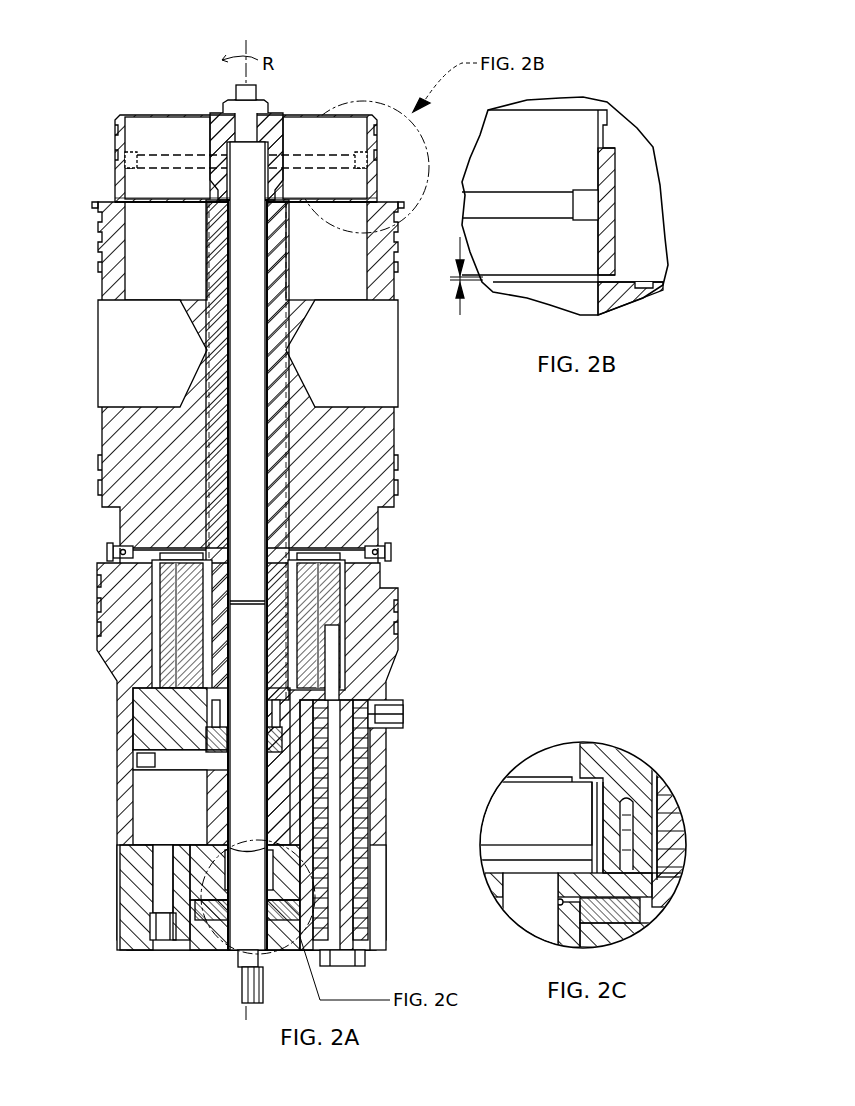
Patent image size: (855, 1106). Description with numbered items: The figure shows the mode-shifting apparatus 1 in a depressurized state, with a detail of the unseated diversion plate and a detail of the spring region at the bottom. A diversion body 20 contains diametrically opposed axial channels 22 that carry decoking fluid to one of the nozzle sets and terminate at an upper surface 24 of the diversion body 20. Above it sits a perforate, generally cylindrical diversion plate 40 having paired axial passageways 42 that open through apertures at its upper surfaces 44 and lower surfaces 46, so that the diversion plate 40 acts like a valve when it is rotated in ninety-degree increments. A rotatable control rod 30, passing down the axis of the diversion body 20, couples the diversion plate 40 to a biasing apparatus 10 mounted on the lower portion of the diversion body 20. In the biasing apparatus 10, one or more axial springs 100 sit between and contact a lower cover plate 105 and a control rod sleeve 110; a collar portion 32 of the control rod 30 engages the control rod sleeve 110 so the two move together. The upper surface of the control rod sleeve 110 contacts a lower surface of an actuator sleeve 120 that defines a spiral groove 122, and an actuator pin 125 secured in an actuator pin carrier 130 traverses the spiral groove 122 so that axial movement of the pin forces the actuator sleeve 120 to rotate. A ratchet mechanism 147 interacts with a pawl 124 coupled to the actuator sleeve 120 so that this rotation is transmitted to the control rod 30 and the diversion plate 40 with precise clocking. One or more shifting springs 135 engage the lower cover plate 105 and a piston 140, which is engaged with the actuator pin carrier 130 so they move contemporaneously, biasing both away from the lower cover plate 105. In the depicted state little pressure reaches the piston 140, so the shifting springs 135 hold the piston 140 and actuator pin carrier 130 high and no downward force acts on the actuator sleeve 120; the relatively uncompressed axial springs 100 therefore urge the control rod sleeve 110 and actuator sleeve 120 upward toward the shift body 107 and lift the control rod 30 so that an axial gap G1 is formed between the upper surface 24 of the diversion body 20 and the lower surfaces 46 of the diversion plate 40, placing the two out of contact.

In FIG. 2A, the mode-shifting apparatus 1 is at (145, 68).
In FIG. 2A, the biasing apparatus 10 is at (411, 946).
In FIG. 2A, the diversion body 20 is at (110, 265).
In FIG. 2A, the axial channels 22 is at (248, 304).
In FIG. 2A, the upper surface 24 is at (108, 198).
In FIG. 2B, the upper surface 24 is at (637, 272).
In FIG. 2A, the control rod 30 is at (395, 482).
In FIG. 2A, the collar portion 32 is at (262, 958).
In FIG. 2A, the diversion plate 40 is at (372, 112).
In FIG. 2B, the diversion plate 40 is at (598, 160).
In FIG. 2A, the axial passageways 42 is at (112, 135).
In FIG. 2A, the upper surfaces 44 is at (218, 113).
In FIG. 2A, the lower surfaces 46 is at (372, 200).
In FIG. 2B, the lower surfaces 46 is at (583, 275).
In FIG. 2A, the axial springs 100 is at (215, 948).
In FIG. 2C, the axial springs 100 is at (627, 928).
In FIG. 2A, the lower cover plate 105 is at (122, 893).
In FIG. 2A, the shift body 107 is at (433, 558).
In FIG. 2A, the control rod sleeve 110 is at (185, 955).
In FIG. 2C, the control rod sleeve 110 is at (667, 895).
In FIG. 2A, the actuator sleeve 120 is at (342, 966).
In FIG. 2C, the actuator sleeve 120 is at (627, 770).
In FIG. 2A, the spiral groove 122 is at (210, 787).
In FIG. 2A, the pawl 124 is at (210, 875).
In FIG. 2A, the actuator pin 125 is at (137, 760).
In FIG. 2A, the actuator pin carrier 130 is at (148, 712).
In FIG. 2A, the shifting springs 135 is at (372, 780).
In FIG. 2A, the piston 140 is at (380, 545).
In FIG. 2A, the ratchet mechanism 147 is at (167, 845).
In FIG. 2C, the ratchet mechanism 147 is at (541, 825).
In FIG. 2B, the gap G1 is at (460, 320).